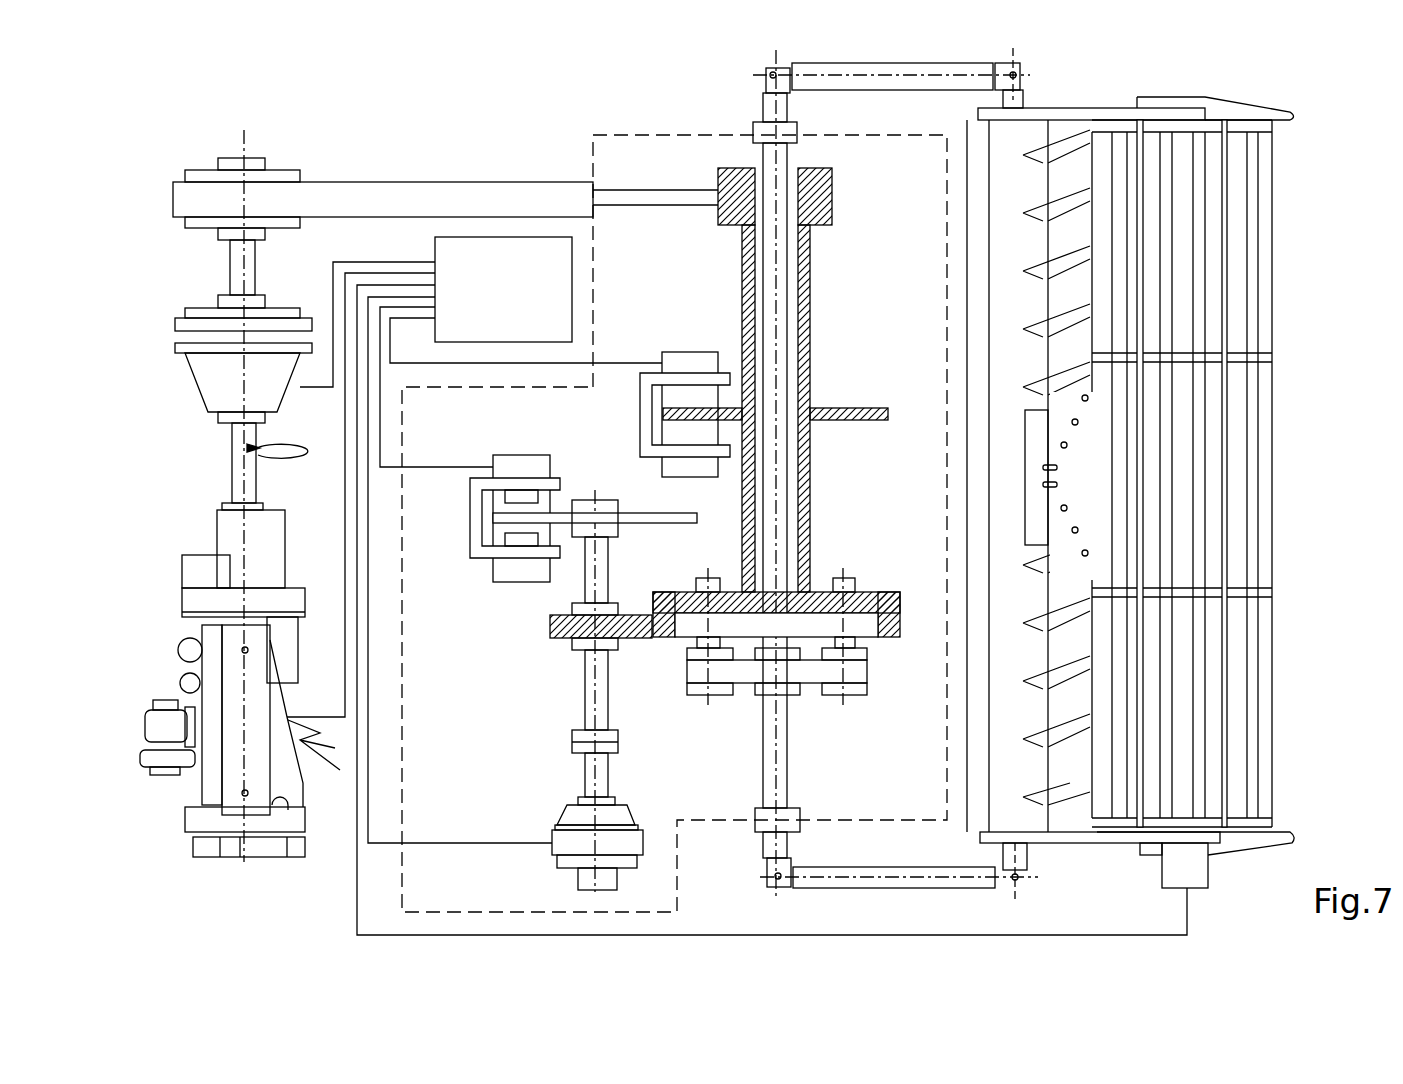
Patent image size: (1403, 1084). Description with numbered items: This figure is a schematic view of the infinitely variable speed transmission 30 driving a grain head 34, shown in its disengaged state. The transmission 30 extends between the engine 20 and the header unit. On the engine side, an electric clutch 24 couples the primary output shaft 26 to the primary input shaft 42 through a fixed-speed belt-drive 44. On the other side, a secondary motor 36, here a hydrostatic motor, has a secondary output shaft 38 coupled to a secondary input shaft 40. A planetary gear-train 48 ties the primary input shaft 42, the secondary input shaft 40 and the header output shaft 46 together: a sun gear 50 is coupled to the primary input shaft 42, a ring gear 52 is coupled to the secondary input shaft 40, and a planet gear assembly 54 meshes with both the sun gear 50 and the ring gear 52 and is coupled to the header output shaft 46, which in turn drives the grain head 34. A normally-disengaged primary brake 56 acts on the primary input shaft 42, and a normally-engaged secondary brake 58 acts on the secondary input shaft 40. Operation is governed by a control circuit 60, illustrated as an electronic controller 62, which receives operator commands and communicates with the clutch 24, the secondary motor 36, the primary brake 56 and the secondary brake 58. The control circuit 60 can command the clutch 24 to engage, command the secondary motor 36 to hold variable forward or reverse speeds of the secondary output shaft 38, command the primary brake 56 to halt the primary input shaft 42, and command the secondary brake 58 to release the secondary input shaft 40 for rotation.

The engine 20 is at (240, 680).
The electric clutch 24 is at (211, 496).
The primary output shaft 26 is at (209, 473).
The infinitely variable speed transmission 30 is at (674, 488).
The grain head 34 is at (1130, 492).
The secondary motor 36 is at (541, 814).
The secondary output shaft 38 is at (655, 782).
The secondary input shaft 40 is at (568, 691).
The primary input shaft 42 is at (823, 380).
The fixed-speed belt-drive 44 is at (445, 164).
The header output shaft 46 is at (795, 475).
The planetary gear-train 48 is at (796, 612).
The sun gear 50 is at (791, 579).
The ring gear 52 is at (634, 691).
The planet gear assembly 54 is at (795, 716).
The primary brake 56 is at (669, 371).
The secondary brake 58 is at (549, 495).
The control circuit 60 is at (696, 601).
The electronic controller 62 is at (503, 289).